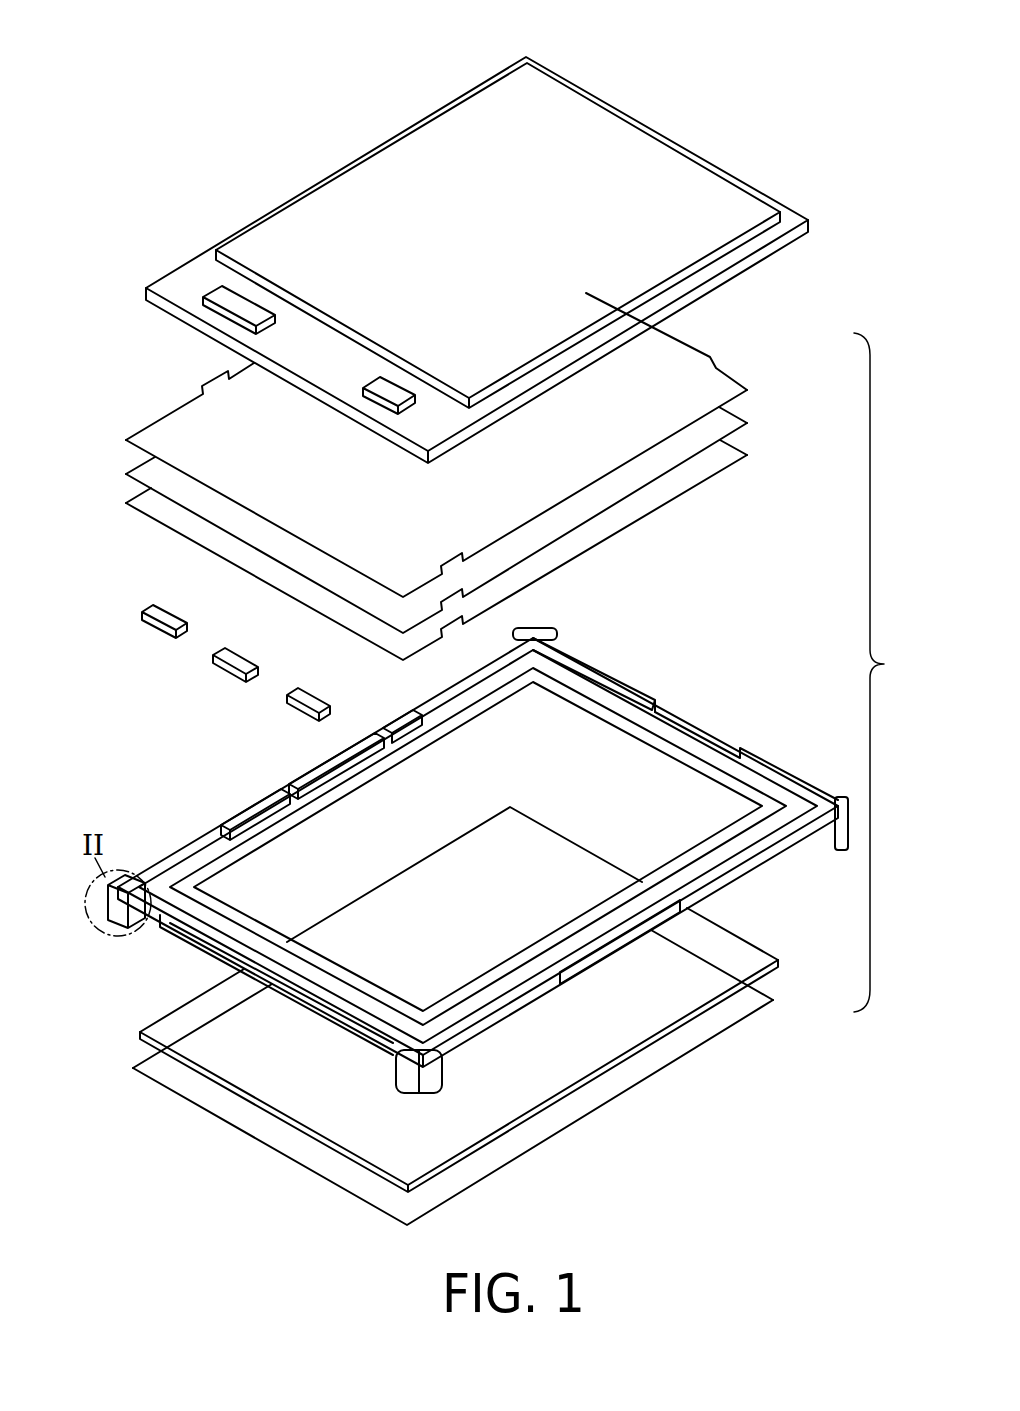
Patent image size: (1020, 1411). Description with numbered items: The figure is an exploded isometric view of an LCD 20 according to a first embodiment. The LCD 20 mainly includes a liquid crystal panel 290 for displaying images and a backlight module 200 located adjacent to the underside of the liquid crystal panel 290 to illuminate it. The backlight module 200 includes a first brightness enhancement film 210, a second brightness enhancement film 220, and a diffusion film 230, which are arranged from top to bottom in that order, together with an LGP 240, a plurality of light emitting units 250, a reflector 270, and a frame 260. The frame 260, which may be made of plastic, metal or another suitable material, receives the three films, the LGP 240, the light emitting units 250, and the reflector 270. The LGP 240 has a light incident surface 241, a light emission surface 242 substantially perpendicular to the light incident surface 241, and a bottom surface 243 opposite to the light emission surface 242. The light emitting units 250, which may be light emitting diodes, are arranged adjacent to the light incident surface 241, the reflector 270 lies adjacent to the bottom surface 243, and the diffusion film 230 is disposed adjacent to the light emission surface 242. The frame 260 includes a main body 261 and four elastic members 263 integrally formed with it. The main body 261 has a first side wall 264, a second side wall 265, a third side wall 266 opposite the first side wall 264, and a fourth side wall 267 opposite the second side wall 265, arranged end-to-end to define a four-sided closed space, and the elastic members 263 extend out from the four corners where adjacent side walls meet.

The LCD 20 is at (508, 34).
The liquid crystal panel 290 is at (693, 187).
The first brightness enhancement film 210 is at (717, 388).
The second brightness enhancement film 220 is at (718, 430).
The diffusion film 230 is at (722, 458).
The light emitting units 250 is at (237, 662).
The frame 260 is at (653, 667).
The main body 261 is at (687, 742).
The elastic members 263 is at (110, 920).
The first side wall 264 is at (232, 842).
The second side wall 265 is at (583, 670).
The third side wall 266 is at (722, 868).
The fourth side wall 267 is at (207, 933).
The LGP 240 is at (738, 947).
The light incident surface 241 is at (240, 1127).
The light emission surface 242 is at (177, 1027).
The bottom surface 243 is at (302, 1133).
The reflector 270 is at (757, 1007).
The backlight module 200 is at (897, 672).